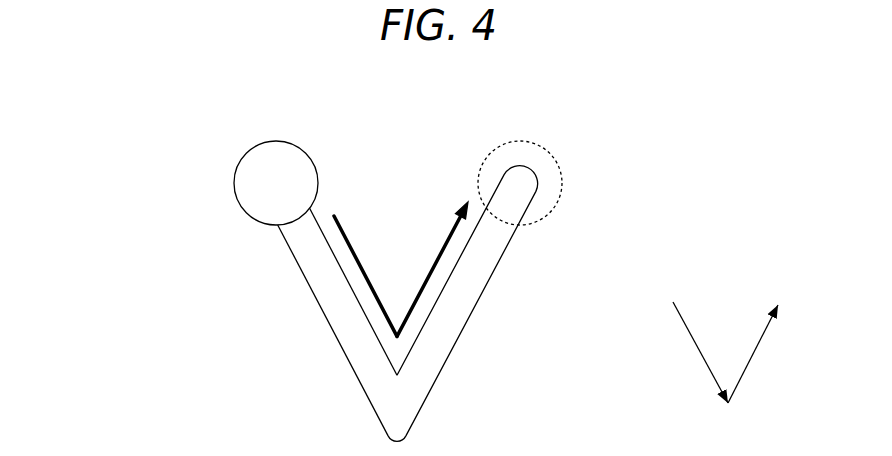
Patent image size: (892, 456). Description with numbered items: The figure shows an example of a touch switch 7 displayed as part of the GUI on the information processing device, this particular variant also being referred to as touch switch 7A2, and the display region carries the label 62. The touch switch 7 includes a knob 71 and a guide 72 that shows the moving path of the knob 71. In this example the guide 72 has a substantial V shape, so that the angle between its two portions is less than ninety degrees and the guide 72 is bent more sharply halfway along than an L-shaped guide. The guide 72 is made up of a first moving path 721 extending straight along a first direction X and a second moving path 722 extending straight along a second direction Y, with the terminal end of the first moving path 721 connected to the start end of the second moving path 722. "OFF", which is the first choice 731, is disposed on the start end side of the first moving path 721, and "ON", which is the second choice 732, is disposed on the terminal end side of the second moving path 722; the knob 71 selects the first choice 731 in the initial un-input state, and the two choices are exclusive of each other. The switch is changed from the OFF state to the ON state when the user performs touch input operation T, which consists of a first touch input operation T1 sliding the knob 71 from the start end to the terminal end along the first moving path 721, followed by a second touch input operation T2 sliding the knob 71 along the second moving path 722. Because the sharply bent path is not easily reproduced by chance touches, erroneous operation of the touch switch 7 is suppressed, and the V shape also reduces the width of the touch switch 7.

The shift pattern display 62 is at (118, 88).
The touch switch 7 is at (438, 128).
The touch switch 7A2 is at (398, 271).
The guide 72 is at (345, 362).
The first moving path 721 is at (335, 303).
The second moving path 722 is at (467, 303).
The knob 71 is at (275, 158).
The first choice 731 is at (191, 165).
The second choice 732 is at (600, 167).
The touch input operation T is at (448, 177).
The first touch input operation T1 is at (341, 221).
The second touch input operation T2 is at (447, 223).
The first direction X is at (698, 341).
The second direction Y is at (756, 341).